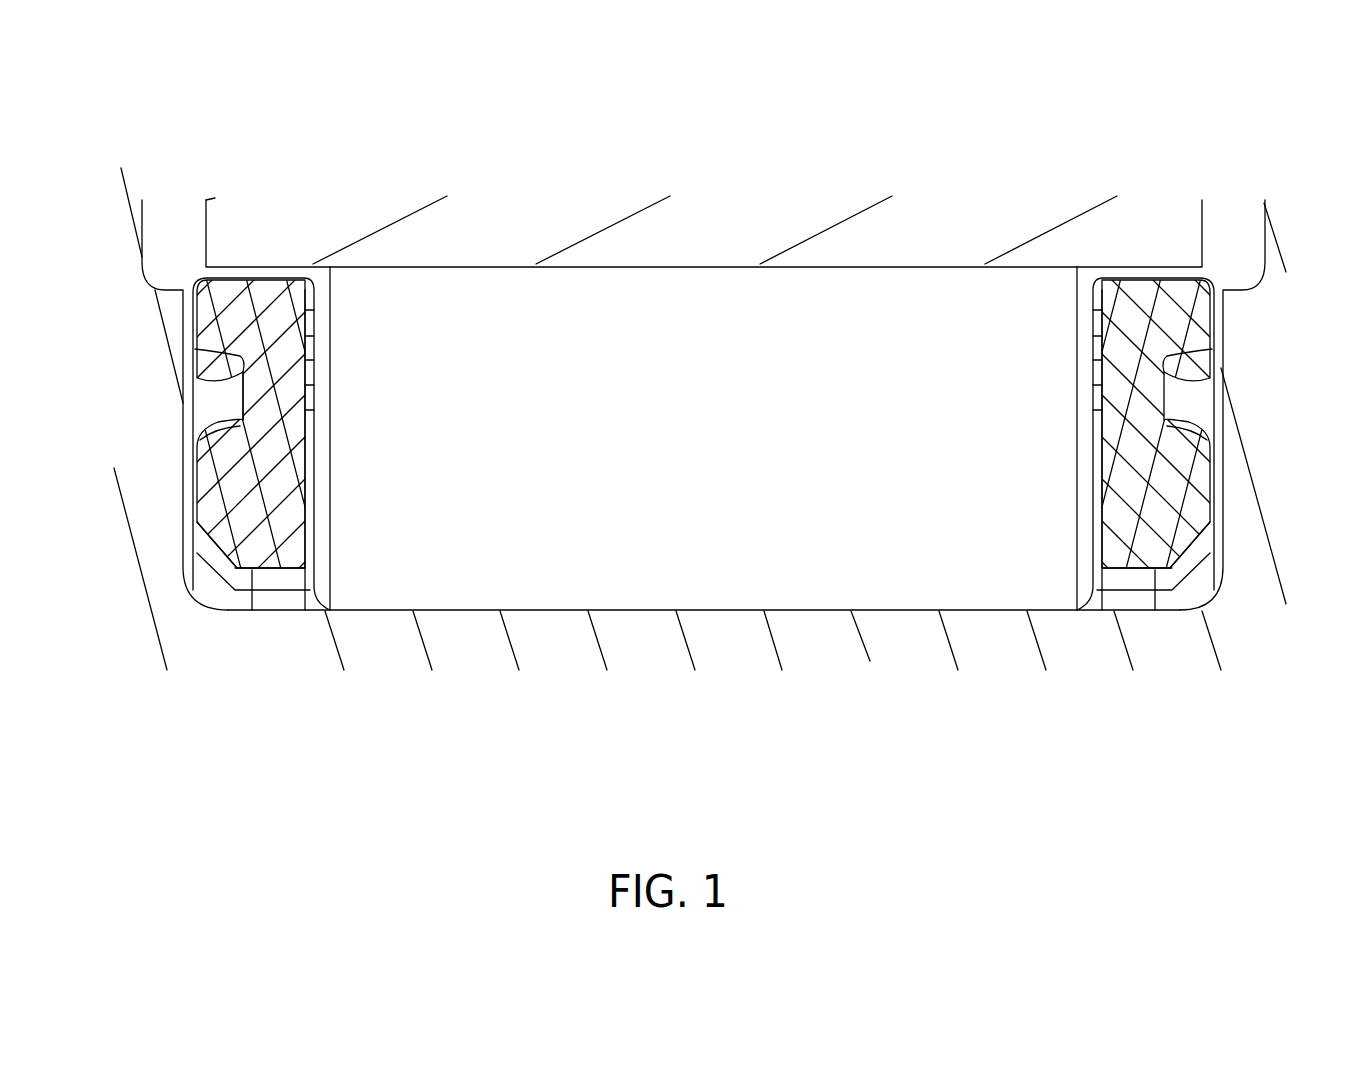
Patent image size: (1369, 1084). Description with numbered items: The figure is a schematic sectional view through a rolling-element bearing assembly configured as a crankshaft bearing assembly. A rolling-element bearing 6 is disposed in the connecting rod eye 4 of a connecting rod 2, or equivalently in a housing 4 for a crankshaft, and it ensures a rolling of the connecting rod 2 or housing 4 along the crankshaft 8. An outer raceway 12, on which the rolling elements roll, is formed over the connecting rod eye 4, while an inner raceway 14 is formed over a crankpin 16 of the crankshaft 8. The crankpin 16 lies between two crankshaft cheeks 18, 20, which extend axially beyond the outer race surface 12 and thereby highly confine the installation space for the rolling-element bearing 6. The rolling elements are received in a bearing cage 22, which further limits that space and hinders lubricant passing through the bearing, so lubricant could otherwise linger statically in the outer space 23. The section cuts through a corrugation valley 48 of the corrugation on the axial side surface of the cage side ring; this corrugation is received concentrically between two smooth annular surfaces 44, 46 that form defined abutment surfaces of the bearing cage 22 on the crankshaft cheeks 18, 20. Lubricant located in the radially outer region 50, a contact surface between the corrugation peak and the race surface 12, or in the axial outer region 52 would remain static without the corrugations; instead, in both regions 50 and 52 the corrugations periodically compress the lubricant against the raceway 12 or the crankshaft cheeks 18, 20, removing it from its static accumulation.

The connecting rod 2 is at (717, 247).
The connecting rod eye 4 is at (1155, 268).
The rolling-element bearing 6 is at (718, 455).
The crankshaft 8 is at (720, 650).
The outer raceway 12 is at (567, 266).
The inner raceway 14 is at (465, 611).
The crankpin 16 is at (910, 650).
The crankshaft cheek 18 is at (168, 560).
The crankshaft cheek 20 is at (1243, 545).
The bearing cage 22 is at (250, 317).
The outer space 23 is at (1192, 412).
The smooth annular surface 44 is at (247, 515).
The smooth annular surface 46 is at (210, 332).
The corrugation valley 48 is at (202, 430).
The radially outer region 50 is at (262, 268).
The axial outer region 52 is at (222, 403).